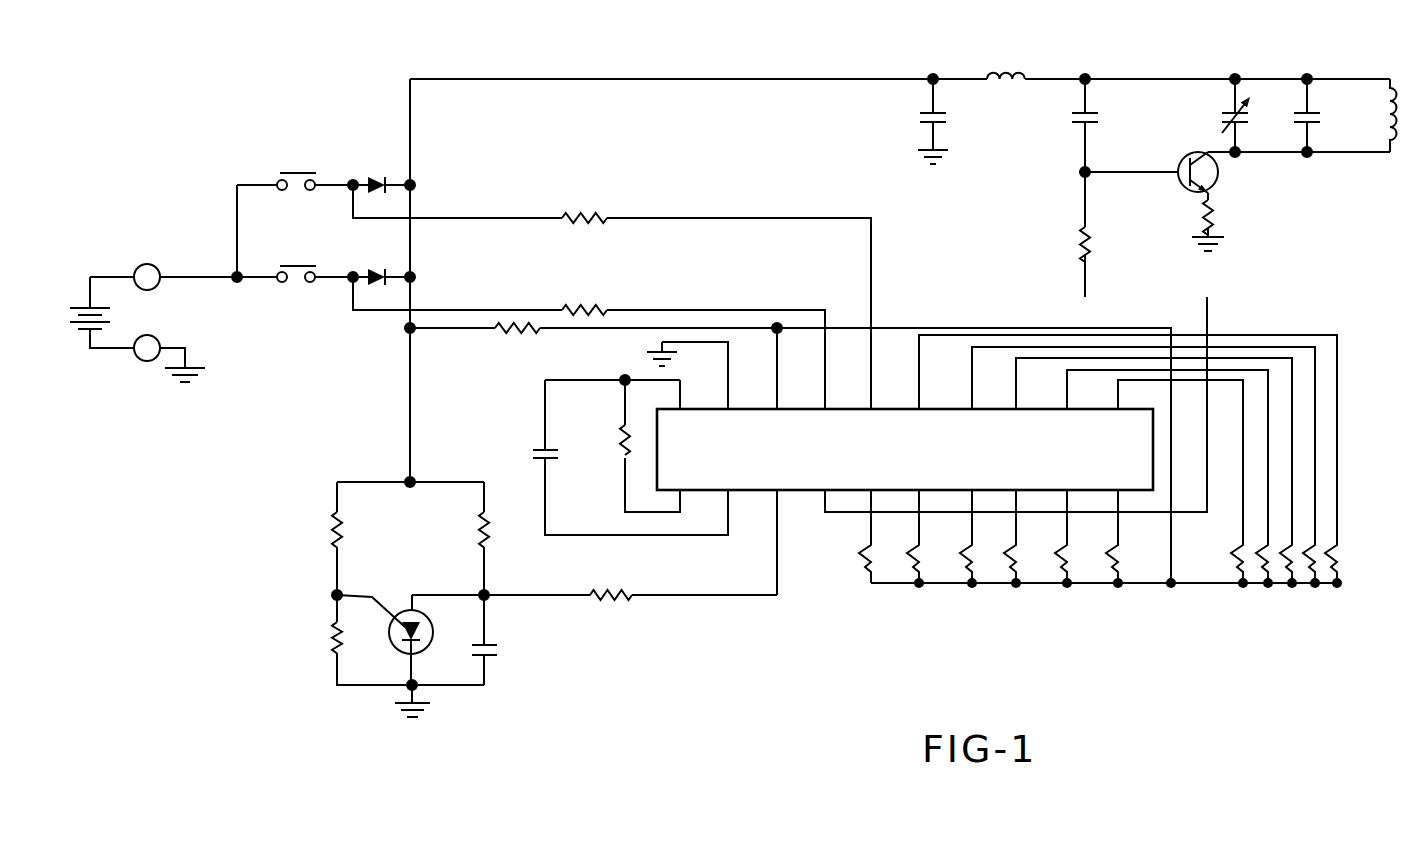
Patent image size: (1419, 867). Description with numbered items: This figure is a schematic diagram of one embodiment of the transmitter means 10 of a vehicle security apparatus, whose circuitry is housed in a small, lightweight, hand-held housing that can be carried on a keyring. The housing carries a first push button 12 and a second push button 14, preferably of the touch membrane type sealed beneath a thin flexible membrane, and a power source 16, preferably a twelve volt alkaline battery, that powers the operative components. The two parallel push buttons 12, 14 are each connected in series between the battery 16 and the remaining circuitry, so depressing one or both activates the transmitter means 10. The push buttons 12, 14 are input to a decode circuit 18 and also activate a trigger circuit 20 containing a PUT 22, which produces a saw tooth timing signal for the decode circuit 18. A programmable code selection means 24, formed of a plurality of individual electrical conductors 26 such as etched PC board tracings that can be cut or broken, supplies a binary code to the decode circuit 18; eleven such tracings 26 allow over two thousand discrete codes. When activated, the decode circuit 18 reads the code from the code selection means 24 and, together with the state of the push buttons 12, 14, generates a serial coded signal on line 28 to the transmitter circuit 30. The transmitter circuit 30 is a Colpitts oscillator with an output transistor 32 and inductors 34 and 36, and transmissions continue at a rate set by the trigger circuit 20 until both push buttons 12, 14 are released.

The transmitter means 10 is at (742, 12).
The first push button 12 is at (270, 176).
The second push button 14 is at (270, 266).
The power source 16 is at (62, 312).
The decode circuit 18 is at (1145, 447).
The trigger circuit 20 is at (522, 593).
The PUT 22 is at (398, 628).
The programmable code selection means 24 is at (1215, 532).
The electrical conductors 26 is at (1120, 537).
The line 28 is at (1087, 282).
The transmitter circuit 30 is at (1278, 145).
The output transistor 32 is at (1220, 172).
The inductor 34 is at (990, 78).
The inductor 36 is at (1393, 142).